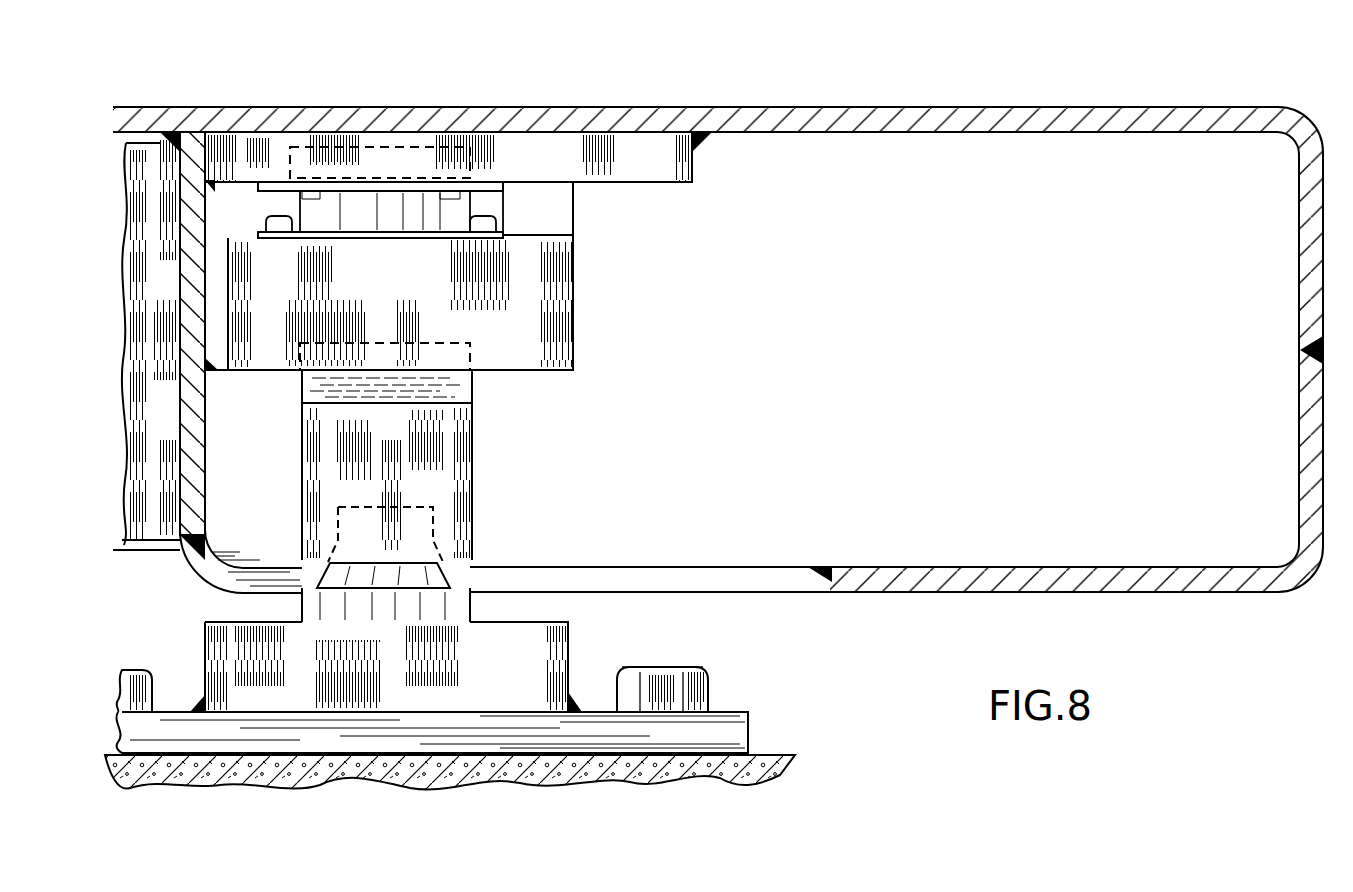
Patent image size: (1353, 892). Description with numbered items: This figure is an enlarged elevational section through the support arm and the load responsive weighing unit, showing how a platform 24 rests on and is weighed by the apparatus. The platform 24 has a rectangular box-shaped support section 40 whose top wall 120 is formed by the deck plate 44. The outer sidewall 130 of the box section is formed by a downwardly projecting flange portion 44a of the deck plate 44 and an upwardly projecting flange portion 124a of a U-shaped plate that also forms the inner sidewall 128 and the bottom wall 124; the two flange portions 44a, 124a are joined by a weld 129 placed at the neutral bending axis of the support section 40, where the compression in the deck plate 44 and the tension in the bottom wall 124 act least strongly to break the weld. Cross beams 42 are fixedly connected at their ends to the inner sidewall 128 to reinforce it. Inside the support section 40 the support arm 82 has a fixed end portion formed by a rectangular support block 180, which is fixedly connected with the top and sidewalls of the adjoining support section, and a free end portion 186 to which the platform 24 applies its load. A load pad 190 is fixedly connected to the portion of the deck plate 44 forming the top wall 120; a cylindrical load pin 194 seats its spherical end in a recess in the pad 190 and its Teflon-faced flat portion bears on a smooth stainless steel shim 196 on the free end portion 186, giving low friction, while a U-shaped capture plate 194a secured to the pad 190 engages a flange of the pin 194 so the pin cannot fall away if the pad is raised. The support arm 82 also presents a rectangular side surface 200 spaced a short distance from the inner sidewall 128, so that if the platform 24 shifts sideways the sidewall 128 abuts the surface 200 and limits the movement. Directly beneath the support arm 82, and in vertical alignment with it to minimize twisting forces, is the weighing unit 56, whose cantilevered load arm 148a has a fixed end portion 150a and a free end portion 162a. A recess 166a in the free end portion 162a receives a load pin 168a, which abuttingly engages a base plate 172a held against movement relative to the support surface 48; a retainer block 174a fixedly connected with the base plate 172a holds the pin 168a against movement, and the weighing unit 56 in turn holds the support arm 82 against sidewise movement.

The platform 24 is at (718, 331).
The support section 40 is at (1196, 346).
The cross beams 42 is at (152, 298).
The deck plate 44 is at (830, 118).
The downwardly projecting flange portion 44a is at (1302, 242).
The support surface 48 is at (774, 757).
The weighing unit 56 is at (482, 608).
The support arm 82 is at (446, 209).
The top wall 120 is at (738, 96).
The bottom wall 124 is at (1124, 596).
The upwardly projecting flange portion 124a is at (1306, 437).
The inner sidewall 128 is at (192, 390).
The weld 129 is at (1300, 352).
The outer sidewall 130 is at (1298, 398).
The load arm 148a is at (400, 466).
The fixed end portion 150a is at (456, 394).
The free end portion 162a is at (452, 452).
The recess 166a is at (305, 515).
The load pin 168a is at (440, 572).
The base plate 172a is at (742, 730).
The retainer block 174a is at (548, 650).
The support block 180 is at (563, 197).
The free end portion 186 is at (532, 272).
The load pad 190 is at (280, 150).
The load pin 194 is at (386, 205).
The capture plate 194a is at (483, 188).
The stainless steel shim 196 is at (494, 224).
The side surface 200 is at (232, 320).